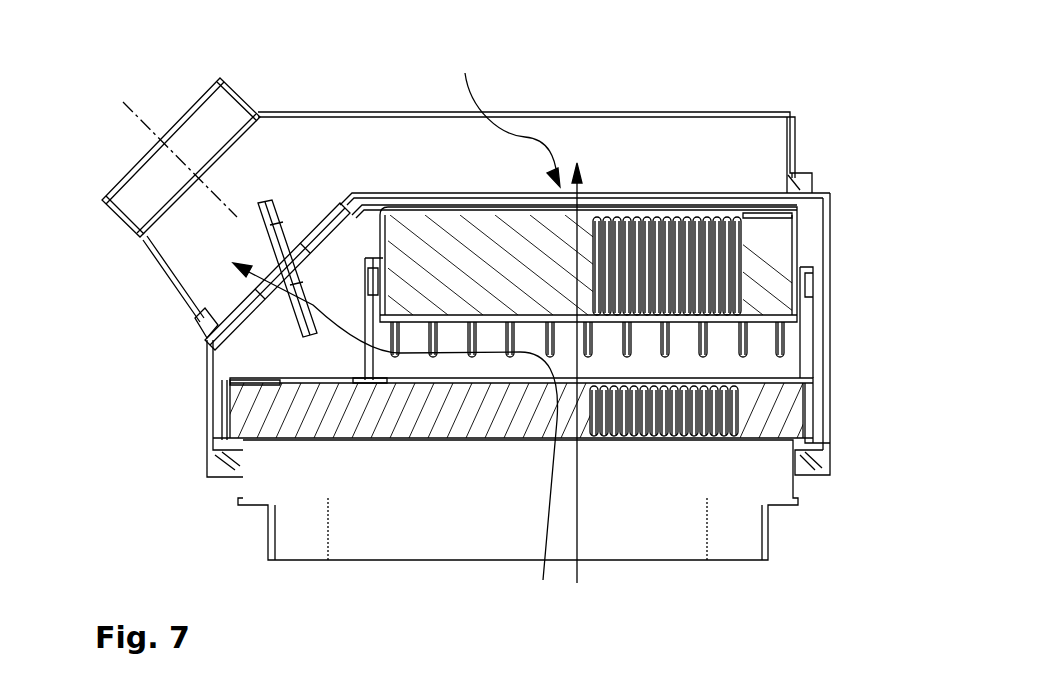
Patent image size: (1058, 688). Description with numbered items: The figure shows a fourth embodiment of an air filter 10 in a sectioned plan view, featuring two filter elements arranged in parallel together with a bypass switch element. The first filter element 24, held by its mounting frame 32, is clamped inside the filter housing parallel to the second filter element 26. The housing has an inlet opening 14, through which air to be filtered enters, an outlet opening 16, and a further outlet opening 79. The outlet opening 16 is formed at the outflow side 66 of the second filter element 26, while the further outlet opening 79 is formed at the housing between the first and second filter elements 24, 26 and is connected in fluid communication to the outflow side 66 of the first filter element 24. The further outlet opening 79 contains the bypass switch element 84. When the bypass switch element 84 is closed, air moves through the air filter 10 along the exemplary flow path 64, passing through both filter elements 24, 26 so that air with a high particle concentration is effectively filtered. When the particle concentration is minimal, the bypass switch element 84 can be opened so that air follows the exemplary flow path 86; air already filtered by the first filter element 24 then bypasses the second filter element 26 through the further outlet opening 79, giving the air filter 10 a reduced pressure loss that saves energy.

The air filter 10 is at (758, 76).
The inlet opening 14 is at (420, 555).
The outlet opening 16 is at (493, 122).
The first filter element 24 is at (783, 405).
The second filter element 26 is at (790, 250).
The mounting frame 32 is at (223, 393).
The flow path 64 is at (578, 548).
The outflow side 66 is at (747, 217).
The further outlet opening 79 is at (306, 212).
The bypass switch element 84 is at (262, 218).
The flow path 86 is at (545, 548).